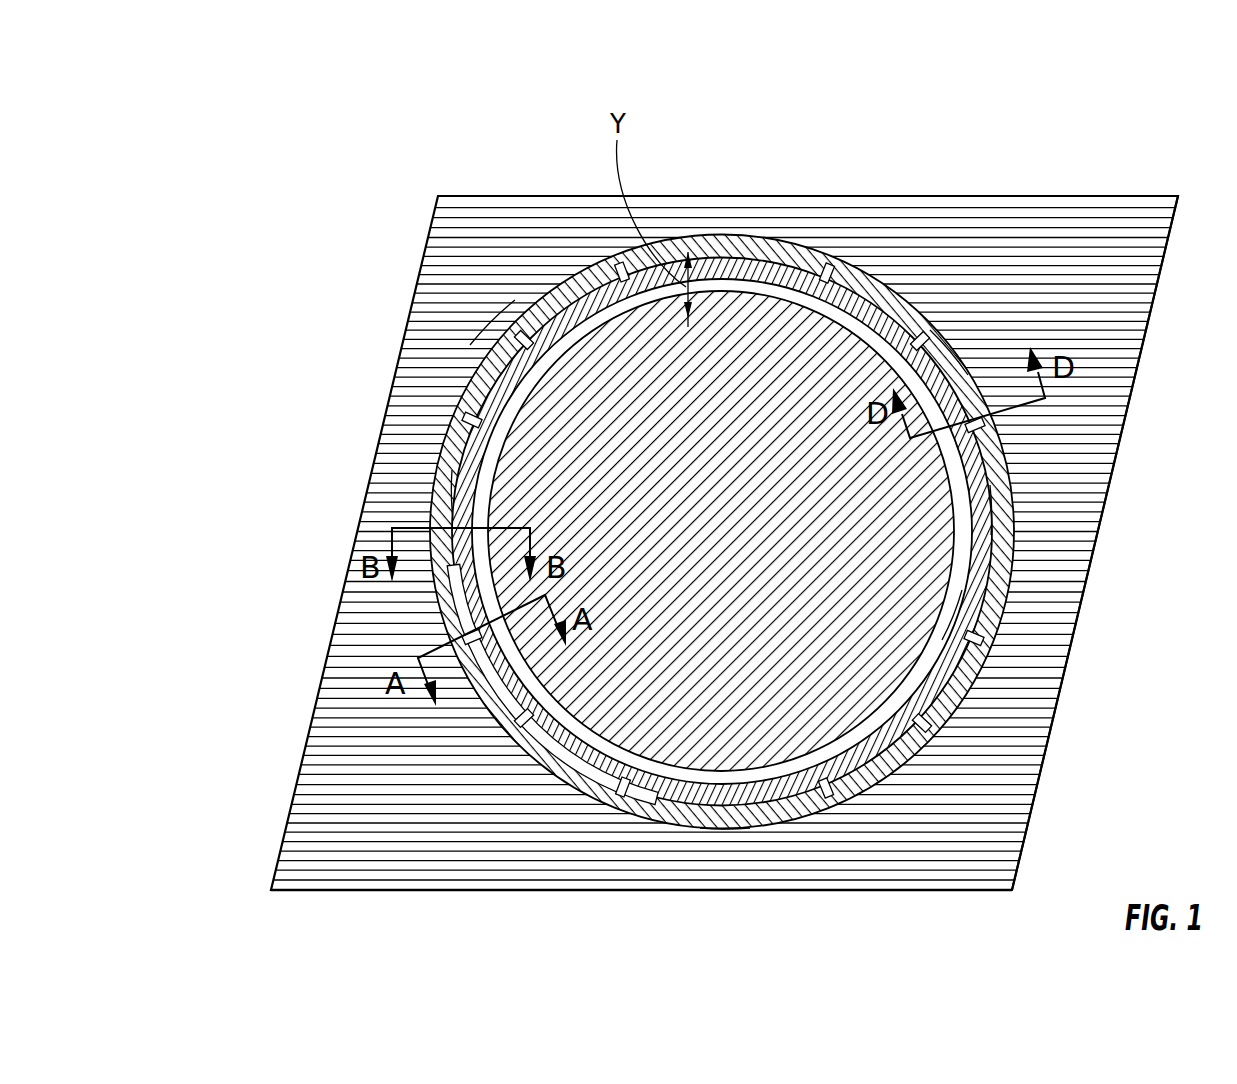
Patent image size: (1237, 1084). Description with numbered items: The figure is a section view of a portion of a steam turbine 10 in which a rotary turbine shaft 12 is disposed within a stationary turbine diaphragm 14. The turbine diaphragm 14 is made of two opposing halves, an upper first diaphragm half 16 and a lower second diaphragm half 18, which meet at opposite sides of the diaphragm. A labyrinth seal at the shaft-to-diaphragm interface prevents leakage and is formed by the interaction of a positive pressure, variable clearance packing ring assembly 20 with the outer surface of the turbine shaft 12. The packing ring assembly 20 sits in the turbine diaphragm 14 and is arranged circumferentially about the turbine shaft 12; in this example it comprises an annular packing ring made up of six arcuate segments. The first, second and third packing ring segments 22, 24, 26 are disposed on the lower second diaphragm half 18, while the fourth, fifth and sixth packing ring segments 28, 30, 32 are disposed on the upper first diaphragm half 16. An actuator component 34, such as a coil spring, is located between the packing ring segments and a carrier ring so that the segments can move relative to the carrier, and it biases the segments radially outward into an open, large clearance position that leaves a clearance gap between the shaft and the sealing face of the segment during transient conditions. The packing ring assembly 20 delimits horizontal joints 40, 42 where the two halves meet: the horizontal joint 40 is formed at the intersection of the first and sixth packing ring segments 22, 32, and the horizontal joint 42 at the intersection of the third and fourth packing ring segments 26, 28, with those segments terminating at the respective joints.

The steam turbine 10 is at (232, 116).
The turbine shaft 12 is at (821, 705).
The turbine diaphragm 14 is at (1013, 768).
The first diaphragm half 16 is at (1112, 210).
The second diaphragm half 18 is at (401, 878).
The packing ring assembly 20 is at (857, 297).
The first packing ring segment 22 is at (463, 600).
The second packing ring segment 24 is at (724, 826).
The third packing ring segment 26 is at (968, 612).
The fourth packing ring segment 28 is at (950, 363).
The fifth packing ring segment 30 is at (746, 258).
The sixth packing ring segment 32 is at (490, 357).
The actuator component 34 is at (455, 412).
The horizontal joint 40 is at (448, 495).
The horizontal joint 42 is at (997, 510).